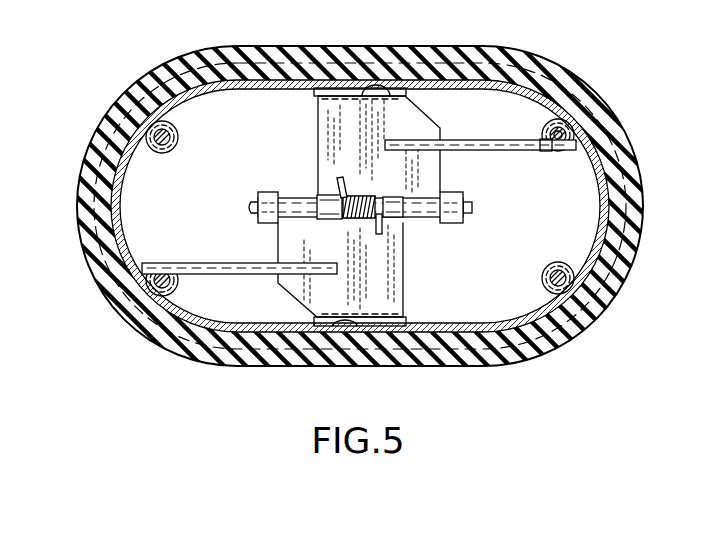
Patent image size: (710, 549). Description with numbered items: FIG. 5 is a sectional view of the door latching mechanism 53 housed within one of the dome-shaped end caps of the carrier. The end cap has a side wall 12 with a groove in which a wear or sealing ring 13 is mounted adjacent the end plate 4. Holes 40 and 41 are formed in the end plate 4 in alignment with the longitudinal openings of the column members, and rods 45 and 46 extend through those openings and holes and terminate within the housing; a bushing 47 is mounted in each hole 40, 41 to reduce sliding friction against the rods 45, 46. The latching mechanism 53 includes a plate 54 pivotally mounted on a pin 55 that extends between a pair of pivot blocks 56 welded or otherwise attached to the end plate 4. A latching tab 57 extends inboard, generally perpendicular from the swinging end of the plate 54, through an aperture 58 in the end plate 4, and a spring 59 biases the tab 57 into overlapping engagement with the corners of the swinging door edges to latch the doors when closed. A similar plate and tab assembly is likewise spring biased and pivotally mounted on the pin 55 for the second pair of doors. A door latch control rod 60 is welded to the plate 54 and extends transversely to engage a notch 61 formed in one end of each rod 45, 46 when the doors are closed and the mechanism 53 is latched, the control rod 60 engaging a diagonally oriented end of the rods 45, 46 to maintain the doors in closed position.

The end plate 4 is at (496, 249).
The side wall 12 is at (260, 83).
The wear or sealing ring 13 is at (453, 348).
The hole 40 is at (542, 123).
The hole 41 is at (151, 154).
The rod 45 is at (583, 125).
The rod 46 is at (148, 126).
The bushing 47 is at (176, 146).
The door latching mechanism 53 is at (430, 112).
The plate 54 is at (338, 151).
The pin 55 is at (474, 208).
The pivot block 56 is at (263, 193).
The latching tab 57 is at (356, 99).
The aperture 58 is at (385, 88).
The spring 59 is at (358, 220).
The door latch control rod 60 is at (478, 146).
The notch 61 is at (540, 141).